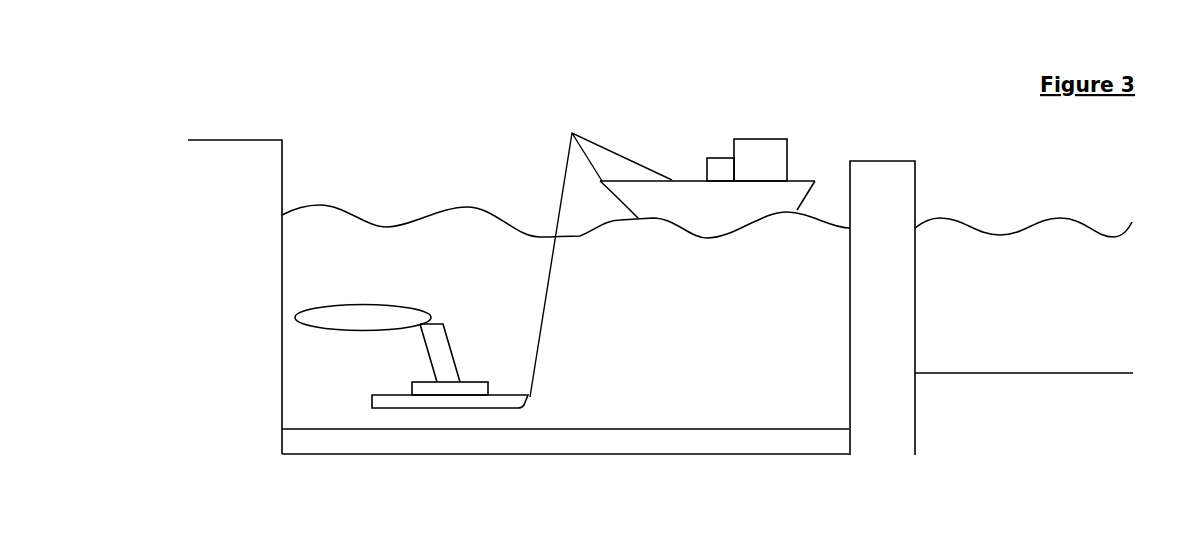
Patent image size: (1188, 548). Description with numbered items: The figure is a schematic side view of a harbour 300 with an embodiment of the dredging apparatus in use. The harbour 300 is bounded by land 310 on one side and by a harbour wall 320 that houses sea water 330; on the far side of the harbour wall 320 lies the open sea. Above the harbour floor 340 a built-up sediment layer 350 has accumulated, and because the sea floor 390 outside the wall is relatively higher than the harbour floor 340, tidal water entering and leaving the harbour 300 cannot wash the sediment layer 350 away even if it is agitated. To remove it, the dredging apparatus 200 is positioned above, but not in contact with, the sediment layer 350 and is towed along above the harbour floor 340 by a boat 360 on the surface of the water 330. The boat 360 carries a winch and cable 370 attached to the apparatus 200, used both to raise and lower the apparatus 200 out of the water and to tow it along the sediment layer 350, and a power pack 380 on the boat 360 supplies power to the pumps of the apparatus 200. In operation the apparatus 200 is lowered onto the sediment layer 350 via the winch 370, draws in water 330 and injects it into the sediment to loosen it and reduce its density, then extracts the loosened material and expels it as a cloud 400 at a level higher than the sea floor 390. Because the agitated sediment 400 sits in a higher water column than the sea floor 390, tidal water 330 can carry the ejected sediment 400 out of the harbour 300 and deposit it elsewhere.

The harbour 300 is at (434, 76).
The land 310 is at (246, 250).
The harbour wall 320 is at (888, 190).
The sea water 330 is at (705, 327).
The harbour floor 340 is at (491, 488).
The sediment layer 350 is at (718, 457).
The boat 360 is at (698, 205).
The winch and cable 370 is at (565, 165).
The power pack 380 is at (722, 170).
The sea floor 390 is at (1065, 373).
The dredging apparatus 200 is at (510, 395).
The cloud of agitated sediment 400 is at (370, 318).